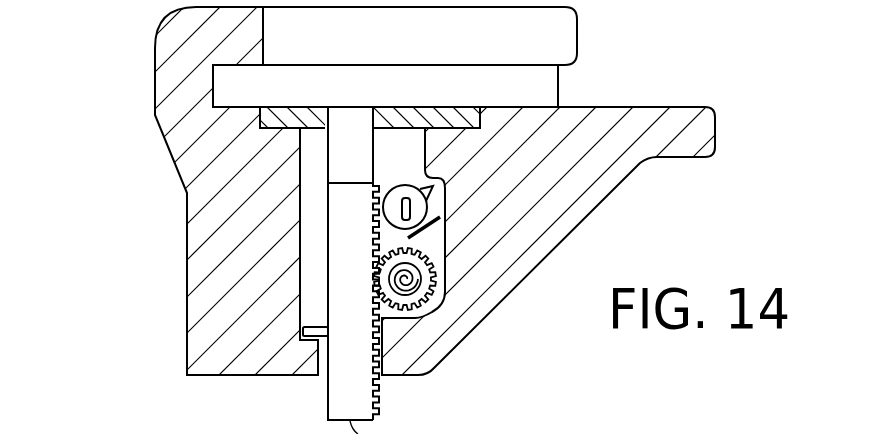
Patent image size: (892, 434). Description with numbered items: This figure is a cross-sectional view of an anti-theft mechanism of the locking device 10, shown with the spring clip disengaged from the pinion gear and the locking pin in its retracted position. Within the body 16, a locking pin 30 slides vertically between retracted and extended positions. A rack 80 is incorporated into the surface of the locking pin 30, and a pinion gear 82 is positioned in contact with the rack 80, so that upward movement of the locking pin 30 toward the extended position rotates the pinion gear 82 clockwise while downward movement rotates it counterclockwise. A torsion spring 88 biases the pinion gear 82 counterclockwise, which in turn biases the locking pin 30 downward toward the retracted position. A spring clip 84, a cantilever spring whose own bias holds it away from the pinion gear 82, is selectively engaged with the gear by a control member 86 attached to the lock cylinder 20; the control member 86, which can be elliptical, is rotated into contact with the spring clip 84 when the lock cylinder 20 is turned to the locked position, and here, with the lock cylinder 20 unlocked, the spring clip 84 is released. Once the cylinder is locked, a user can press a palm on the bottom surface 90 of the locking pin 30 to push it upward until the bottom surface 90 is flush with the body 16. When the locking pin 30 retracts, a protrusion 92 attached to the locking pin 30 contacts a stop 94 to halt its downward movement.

The locking device 10 is at (128, 198).
The body 16 is at (655, 115).
The lock cylinder 20 is at (407, 192).
The locking pin 30 is at (342, 122).
The rack 80 is at (436, 308).
The pinion gear 82 is at (435, 284).
The spring clip 84 is at (443, 215).
The control member 86 is at (421, 186).
The torsion spring 88 is at (420, 283).
The bottom surface 90 is at (373, 433).
The protrusion 92 is at (300, 336).
The stop 94 is at (310, 353).